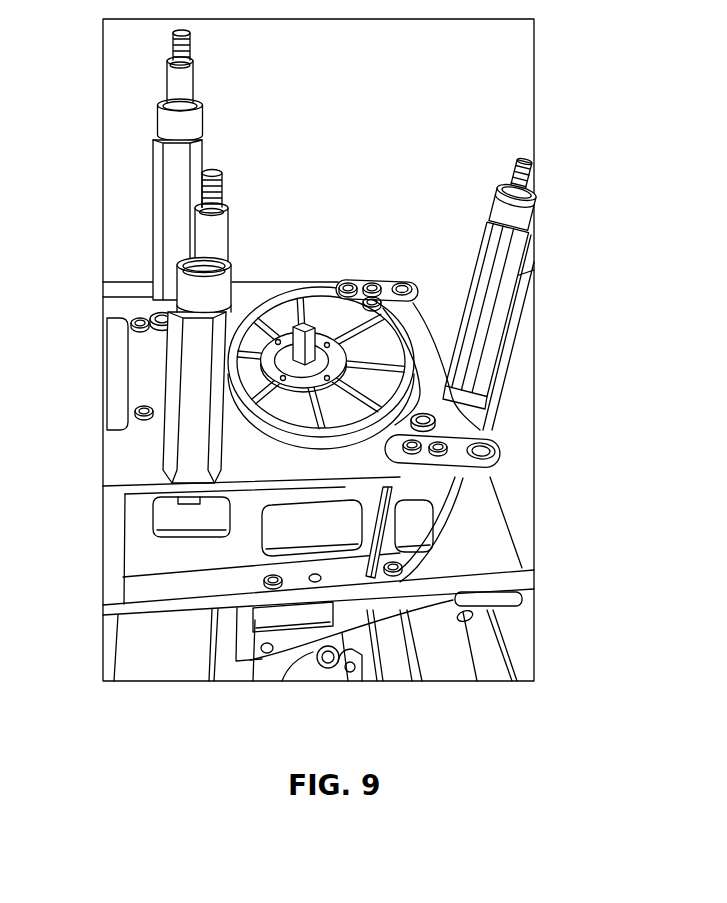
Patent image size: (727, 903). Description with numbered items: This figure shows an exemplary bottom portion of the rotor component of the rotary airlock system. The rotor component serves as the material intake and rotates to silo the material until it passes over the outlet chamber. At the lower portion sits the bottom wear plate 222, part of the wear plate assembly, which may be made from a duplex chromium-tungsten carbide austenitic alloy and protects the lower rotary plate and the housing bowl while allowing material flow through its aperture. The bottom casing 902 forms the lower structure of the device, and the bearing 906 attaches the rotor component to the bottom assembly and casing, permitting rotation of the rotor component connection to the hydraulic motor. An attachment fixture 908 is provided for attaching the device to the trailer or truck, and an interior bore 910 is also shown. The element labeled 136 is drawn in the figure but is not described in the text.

The actuator 136 is at (517, 250).
The bottom wear plate 222 is at (407, 355).
The bottom casing 902 is at (452, 428).
The bearing 906 is at (240, 348).
The attachment fixture 908 is at (470, 605).
The interior bore 910 is at (342, 523).